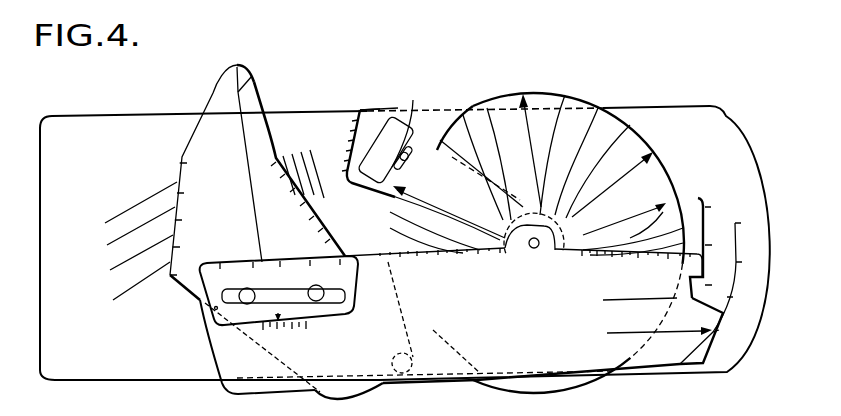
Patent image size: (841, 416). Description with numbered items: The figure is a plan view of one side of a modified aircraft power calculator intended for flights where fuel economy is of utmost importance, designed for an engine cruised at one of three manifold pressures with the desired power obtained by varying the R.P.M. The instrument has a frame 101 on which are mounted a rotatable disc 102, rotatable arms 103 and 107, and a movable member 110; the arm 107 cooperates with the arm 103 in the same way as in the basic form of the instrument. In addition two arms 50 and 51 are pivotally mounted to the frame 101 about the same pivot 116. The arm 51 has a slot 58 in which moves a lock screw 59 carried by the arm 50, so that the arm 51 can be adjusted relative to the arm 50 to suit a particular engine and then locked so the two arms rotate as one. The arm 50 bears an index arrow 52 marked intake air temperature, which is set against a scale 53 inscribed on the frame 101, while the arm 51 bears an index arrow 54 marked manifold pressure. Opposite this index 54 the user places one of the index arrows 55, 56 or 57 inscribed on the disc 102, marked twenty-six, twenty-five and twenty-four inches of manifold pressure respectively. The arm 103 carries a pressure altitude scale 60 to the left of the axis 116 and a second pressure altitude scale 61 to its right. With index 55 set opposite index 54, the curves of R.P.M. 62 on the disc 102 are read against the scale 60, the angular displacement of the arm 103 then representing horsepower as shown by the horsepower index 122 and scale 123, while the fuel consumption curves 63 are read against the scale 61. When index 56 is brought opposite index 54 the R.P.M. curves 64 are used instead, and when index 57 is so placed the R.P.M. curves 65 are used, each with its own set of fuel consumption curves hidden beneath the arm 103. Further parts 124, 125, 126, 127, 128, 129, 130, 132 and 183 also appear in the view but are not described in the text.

The arm 50 is at (397, 140).
The arm 51 is at (387, 205).
The index arrow 52 is at (382, 128).
The scale 53 is at (360, 110).
The index arrow 54 is at (383, 195).
The index arrow 55 is at (432, 198).
The index arrow 56 is at (522, 125).
The index arrow 57 is at (600, 180).
The slot 58 is at (452, 111).
The lock screw 59 is at (398, 170).
The pressure altitude scale 60 is at (463, 262).
The pressure altitude scale 61 is at (624, 262).
The curves of R.P.M. 62 is at (433, 247).
The fuel consumption curves 63 is at (680, 182).
The R.P.M. curves 64 is at (481, 181).
The R.P.M. curves 65 is at (567, 173).
The frame 101 is at (728, 118).
The rotatable disc 102 is at (553, 95).
The rotatable arm 103 is at (681, 364).
The rotatable arm 107 is at (217, 87).
The movable member 110 is at (216, 308).
The pivot 116 is at (552, 232).
The horsepower index 122 is at (692, 277).
The horsepower scale 123 is at (704, 209).
The true air speed slide 124 is at (236, 263).
The gross weight index arrow 125 is at (318, 318).
The gross weight scale 126 is at (285, 331).
The curved edge of pointer plate 127 is at (251, 75).
The cursor 128 is at (405, 376).
The true air speed scale 129 is at (191, 173).
The indicated air speed scale 130 is at (133, 232).
The outside air temperature scale 132 is at (285, 207).
The pressure altitude scale 183 is at (311, 150).